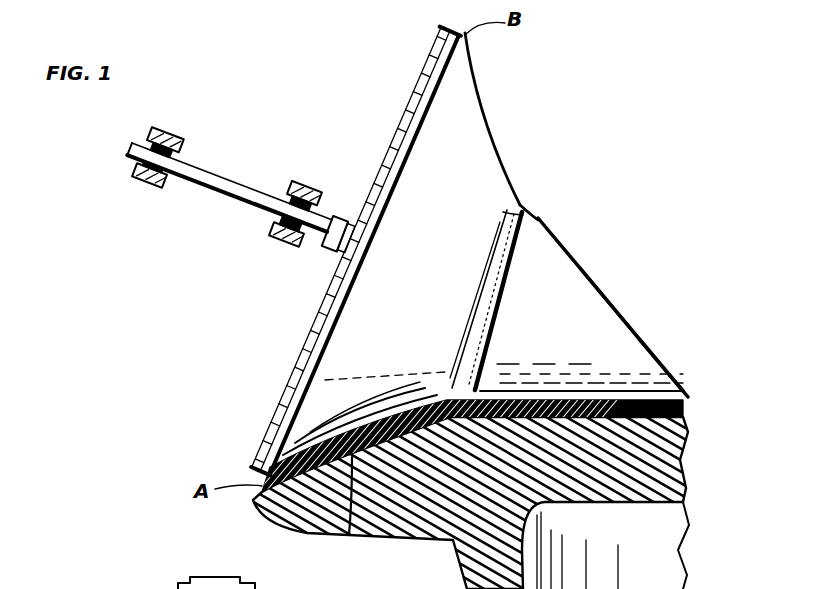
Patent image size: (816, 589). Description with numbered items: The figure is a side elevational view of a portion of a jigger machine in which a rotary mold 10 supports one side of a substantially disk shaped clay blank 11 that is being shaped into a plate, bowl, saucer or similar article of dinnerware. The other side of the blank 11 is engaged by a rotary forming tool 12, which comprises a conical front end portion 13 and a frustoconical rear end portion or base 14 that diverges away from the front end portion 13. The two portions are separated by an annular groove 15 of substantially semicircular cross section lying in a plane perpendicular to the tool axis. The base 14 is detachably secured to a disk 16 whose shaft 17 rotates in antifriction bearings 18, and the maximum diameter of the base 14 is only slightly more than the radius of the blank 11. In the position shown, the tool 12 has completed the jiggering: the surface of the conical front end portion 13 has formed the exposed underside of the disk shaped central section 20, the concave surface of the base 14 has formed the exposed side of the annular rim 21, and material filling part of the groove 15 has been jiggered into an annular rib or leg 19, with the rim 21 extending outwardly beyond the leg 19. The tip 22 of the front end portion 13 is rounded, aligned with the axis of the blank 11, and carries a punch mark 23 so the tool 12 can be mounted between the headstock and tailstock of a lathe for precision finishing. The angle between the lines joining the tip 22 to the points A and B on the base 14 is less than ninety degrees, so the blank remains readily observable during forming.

The rotary mold 10 is at (428, 540).
The disk shaped blank 11 is at (364, 420).
The rotary forming tool 12 is at (577, 257).
The conical front end portion 13 is at (603, 320).
The frustoconical rear end portion or base 14 is at (467, 155).
The annular groove 15 is at (532, 212).
The disk 16 is at (410, 101).
The shaft 17 is at (222, 192).
The antifriction bearings 18 is at (140, 178).
The annular rib or leg 19 is at (445, 390).
The central section 20 is at (565, 400).
The annular rim 21 is at (349, 535).
The tip 22 is at (665, 354).
The punch mark 23 is at (686, 390).